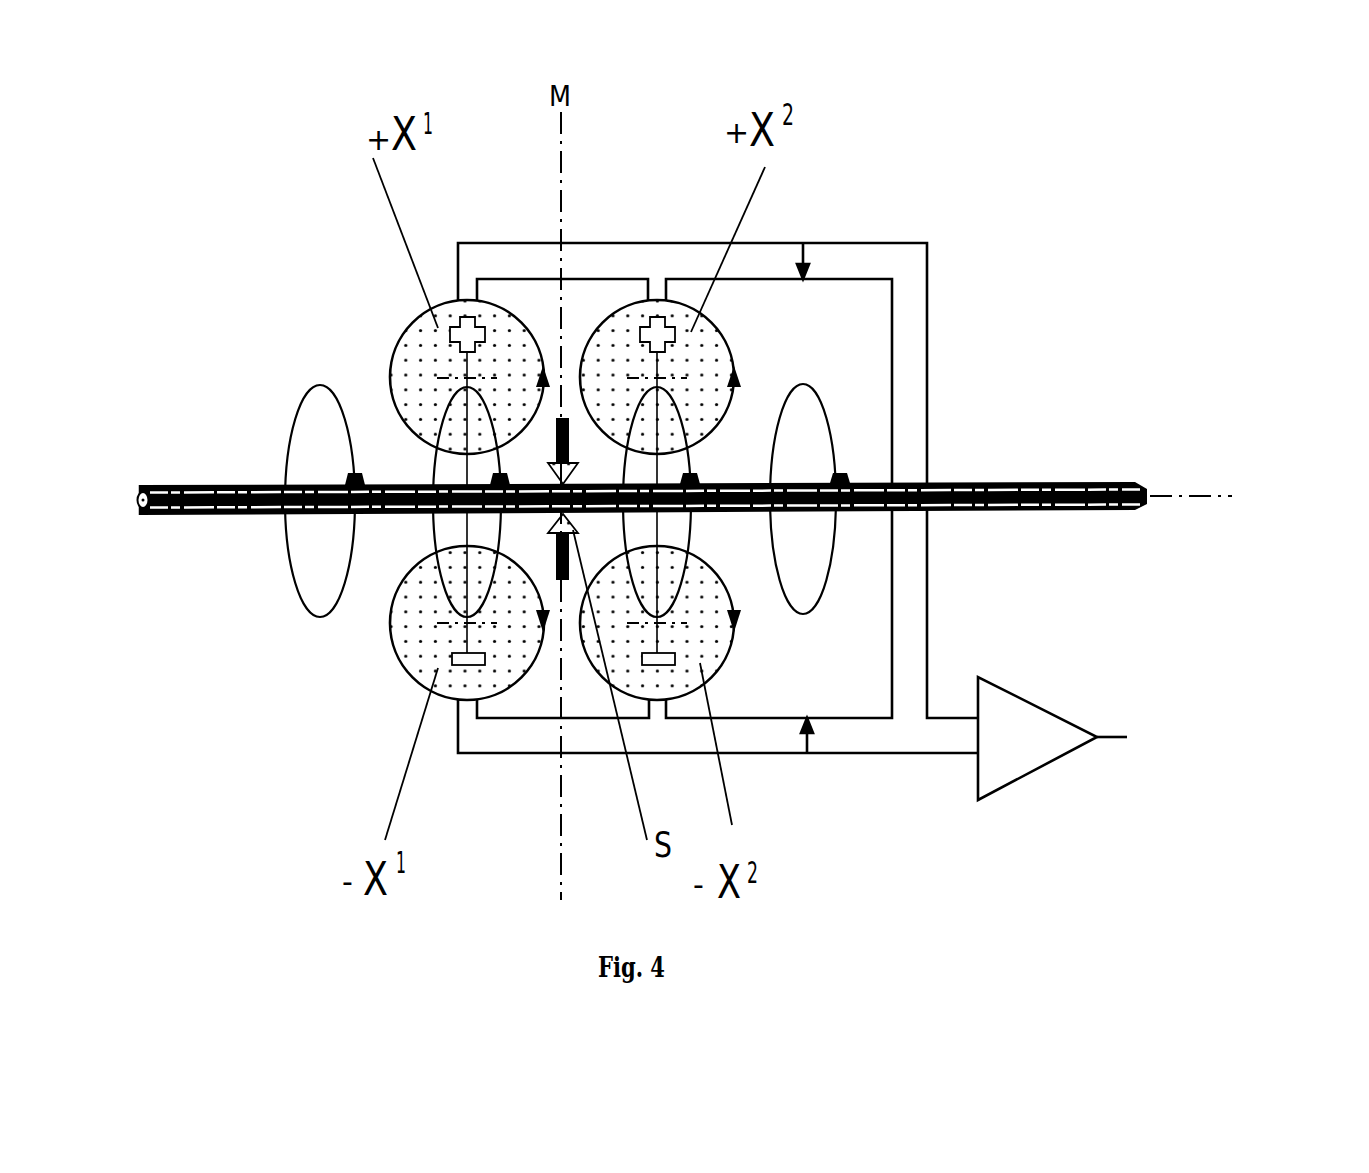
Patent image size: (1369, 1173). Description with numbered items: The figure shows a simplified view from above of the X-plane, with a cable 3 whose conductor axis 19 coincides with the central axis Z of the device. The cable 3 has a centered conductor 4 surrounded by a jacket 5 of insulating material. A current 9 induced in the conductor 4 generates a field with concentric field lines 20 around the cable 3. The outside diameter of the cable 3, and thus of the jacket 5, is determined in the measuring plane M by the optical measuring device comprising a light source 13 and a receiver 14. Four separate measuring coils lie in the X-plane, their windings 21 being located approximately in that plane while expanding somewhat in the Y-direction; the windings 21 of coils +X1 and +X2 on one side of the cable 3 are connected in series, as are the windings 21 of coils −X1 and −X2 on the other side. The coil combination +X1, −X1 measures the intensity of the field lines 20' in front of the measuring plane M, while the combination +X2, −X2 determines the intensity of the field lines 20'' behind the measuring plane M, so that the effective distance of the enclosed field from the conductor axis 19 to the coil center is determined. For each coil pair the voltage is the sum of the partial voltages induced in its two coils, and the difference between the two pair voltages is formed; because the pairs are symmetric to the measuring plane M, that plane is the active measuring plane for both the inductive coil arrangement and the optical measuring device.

The cable 3 is at (199, 617).
The conductor 4 is at (141, 485).
The jacket 5 is at (142, 511).
The current 9 is at (1013, 483).
The light source 13 is at (561, 583).
The receiver 14 is at (574, 679).
The conductor axis 19 is at (1246, 495).
The field lines 20 is at (508, 587).
The field lines in front of the measuring plane 20' is at (354, 651).
The field lines behind the measuring plane 20'' is at (874, 408).
The windings 21 is at (415, 318).